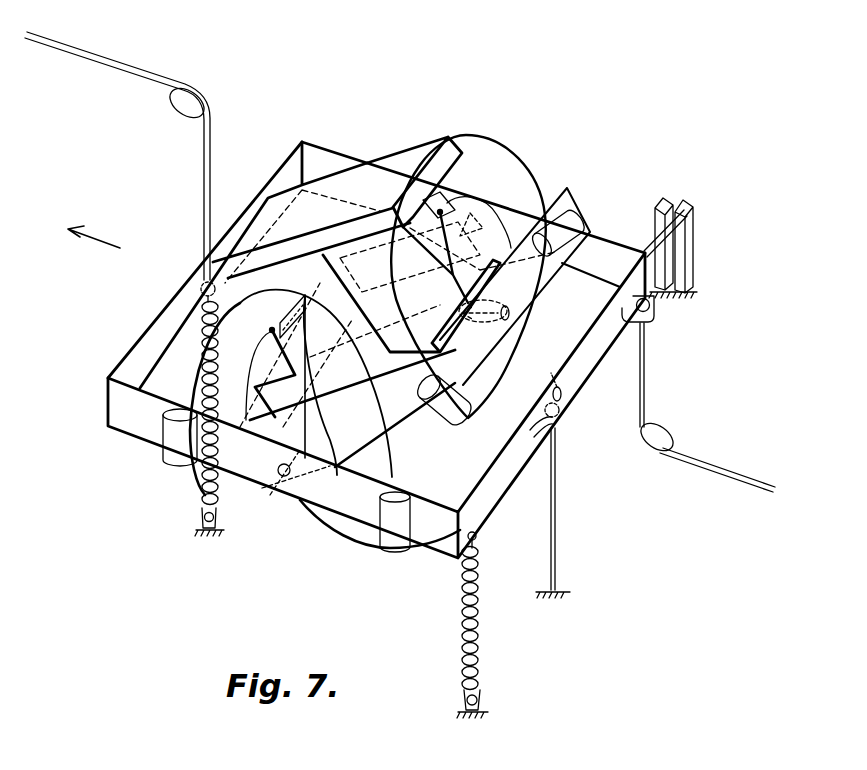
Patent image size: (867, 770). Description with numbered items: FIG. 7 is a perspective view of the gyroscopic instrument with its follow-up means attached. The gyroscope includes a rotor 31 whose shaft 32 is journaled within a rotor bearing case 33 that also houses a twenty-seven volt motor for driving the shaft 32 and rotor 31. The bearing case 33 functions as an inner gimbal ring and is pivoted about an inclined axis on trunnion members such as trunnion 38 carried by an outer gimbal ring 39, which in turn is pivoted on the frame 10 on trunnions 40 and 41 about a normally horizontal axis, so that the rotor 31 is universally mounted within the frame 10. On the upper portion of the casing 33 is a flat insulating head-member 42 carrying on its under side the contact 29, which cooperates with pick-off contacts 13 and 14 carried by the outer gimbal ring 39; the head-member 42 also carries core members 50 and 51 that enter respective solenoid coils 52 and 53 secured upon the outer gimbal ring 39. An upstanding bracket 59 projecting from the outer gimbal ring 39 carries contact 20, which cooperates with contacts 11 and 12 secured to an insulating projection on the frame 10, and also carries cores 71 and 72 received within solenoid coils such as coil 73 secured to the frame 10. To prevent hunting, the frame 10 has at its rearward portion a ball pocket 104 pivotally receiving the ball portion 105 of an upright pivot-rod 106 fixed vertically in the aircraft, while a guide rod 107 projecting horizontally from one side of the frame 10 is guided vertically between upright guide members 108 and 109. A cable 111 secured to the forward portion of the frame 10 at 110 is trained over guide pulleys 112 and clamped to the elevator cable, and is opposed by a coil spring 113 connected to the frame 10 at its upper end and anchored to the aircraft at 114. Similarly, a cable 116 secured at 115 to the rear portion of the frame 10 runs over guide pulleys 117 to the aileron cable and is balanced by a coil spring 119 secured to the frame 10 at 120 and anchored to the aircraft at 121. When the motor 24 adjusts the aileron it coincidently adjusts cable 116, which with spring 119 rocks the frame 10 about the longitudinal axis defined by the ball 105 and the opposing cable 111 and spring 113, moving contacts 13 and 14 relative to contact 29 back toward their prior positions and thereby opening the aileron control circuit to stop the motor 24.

The frame 10 is at (115, 412).
The contact 11 is at (262, 331).
The contact 12 is at (325, 390).
The pick-off contact 13 is at (442, 243).
The pick-off contact 14 is at (460, 200).
The contact 20 is at (292, 310).
The motor 24 is at (400, 548).
The contact 29 is at (430, 202).
The rotor 31 is at (333, 531).
The shaft 32 is at (510, 313).
The rotor bearing case 33 is at (297, 272).
The trunnion member 38 is at (305, 327).
The outer gimbal ring 39 is at (540, 290).
The trunnion 40 is at (484, 223).
The trunnion 41 is at (284, 478).
The head-member 42 is at (417, 153).
The core member 50 is at (405, 297).
The core member 51 is at (508, 152).
The solenoid coil 52 is at (466, 415).
The solenoid coil 53 is at (570, 252).
The upstanding bracket 59 is at (318, 360).
The core 71 is at (192, 383).
The core 72 is at (390, 437).
The solenoid coil 73 is at (166, 458).
The ball pocket 104 is at (566, 418).
The ball portion 105 is at (563, 395).
The pivot-rod 106 is at (556, 496).
The guide rod 107 is at (652, 250).
The guide member 108 is at (668, 200).
The guide member 109 is at (690, 218).
The cable attachment point 110 is at (198, 290).
The cable 111 is at (211, 133).
The guide pulley 112 is at (176, 110).
The coil spring 113 is at (202, 499).
The anchor point 114 is at (202, 523).
The cable attachment point 115 is at (656, 317).
The cable 116 is at (646, 372).
The guide pulley 117 is at (672, 438).
The coil spring 119 is at (479, 636).
The spring attachment point 120 is at (477, 536).
The anchor point 121 is at (480, 705).